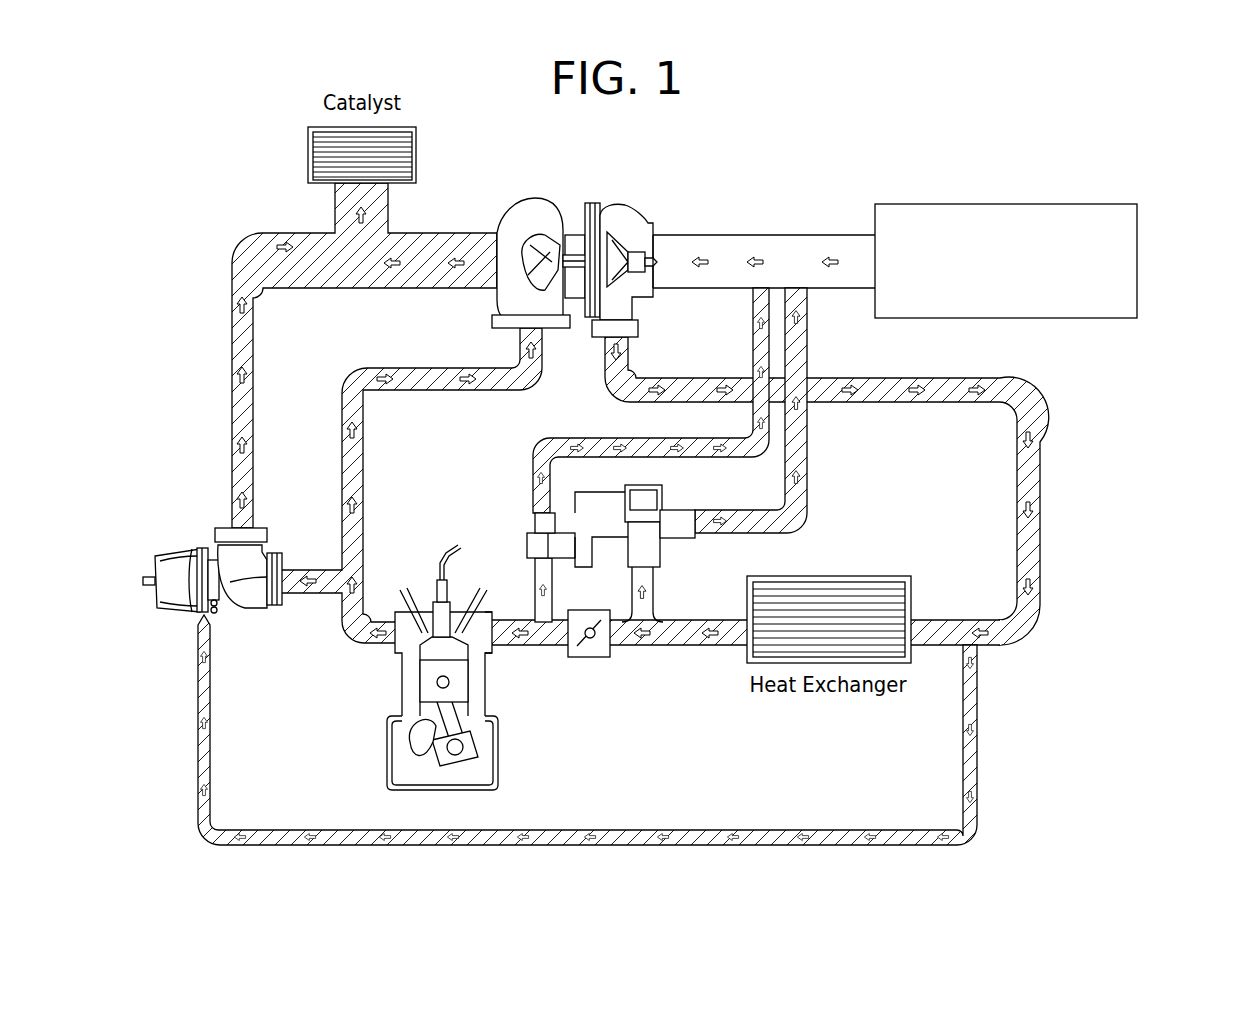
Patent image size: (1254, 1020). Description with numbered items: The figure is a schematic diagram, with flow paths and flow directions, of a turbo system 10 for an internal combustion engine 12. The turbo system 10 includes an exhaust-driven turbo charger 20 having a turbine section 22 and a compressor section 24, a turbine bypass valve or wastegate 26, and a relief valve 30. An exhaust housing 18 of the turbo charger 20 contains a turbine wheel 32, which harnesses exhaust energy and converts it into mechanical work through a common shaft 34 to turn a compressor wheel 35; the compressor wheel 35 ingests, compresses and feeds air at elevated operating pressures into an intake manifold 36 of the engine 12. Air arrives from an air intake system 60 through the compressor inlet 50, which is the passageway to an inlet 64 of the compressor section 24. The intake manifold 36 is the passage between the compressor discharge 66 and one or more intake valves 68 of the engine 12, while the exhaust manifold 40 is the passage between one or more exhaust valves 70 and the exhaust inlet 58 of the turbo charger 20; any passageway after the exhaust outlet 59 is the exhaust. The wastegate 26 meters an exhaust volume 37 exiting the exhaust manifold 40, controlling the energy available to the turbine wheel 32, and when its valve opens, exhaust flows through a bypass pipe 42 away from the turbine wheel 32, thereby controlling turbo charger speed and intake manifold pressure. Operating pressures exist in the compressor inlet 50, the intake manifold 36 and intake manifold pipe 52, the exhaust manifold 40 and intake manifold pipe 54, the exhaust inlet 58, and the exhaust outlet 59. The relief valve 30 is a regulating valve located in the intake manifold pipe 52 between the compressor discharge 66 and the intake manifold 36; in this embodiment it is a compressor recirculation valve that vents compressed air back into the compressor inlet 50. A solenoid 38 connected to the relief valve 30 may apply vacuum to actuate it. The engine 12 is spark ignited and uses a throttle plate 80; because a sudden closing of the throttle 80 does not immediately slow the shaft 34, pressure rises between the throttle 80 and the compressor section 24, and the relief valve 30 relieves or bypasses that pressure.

The turbo system 10 is at (1172, 152).
The internal combustion engine 12 is at (447, 678).
The exhaust housing 18 is at (582, 259).
The exhaust-driven turbo charger 20 is at (656, 228).
The turbine section 22 is at (534, 263).
The compressor section 24 is at (647, 245).
The wastegate 26 is at (180, 613).
The relief valve 30 is at (664, 572).
The turbine wheel 32 is at (543, 272).
The common shaft 34 is at (577, 280).
The compressor wheel 35 is at (623, 273).
The intake manifold 36 is at (493, 650).
The exhaust volume 37 is at (348, 622).
The solenoid 38 is at (527, 540).
The exhaust manifold 40 is at (440, 654).
The bypass pipe 42 is at (254, 410).
The EDT compressor inlet 50 is at (697, 223).
The intake manifold pipe 52 is at (1040, 465).
The intake manifold pipe 54 is at (503, 623).
The exhaust inlet 58 is at (495, 330).
The exhaust outlet 59 is at (497, 230).
The air intake system 60 is at (1022, 204).
The inlet 64 is at (655, 275).
The EDT compressor discharge 66 is at (638, 330).
The intake valves 68 is at (479, 690).
The exhaust valves 70 is at (432, 605).
The throttle plate 80 is at (586, 612).